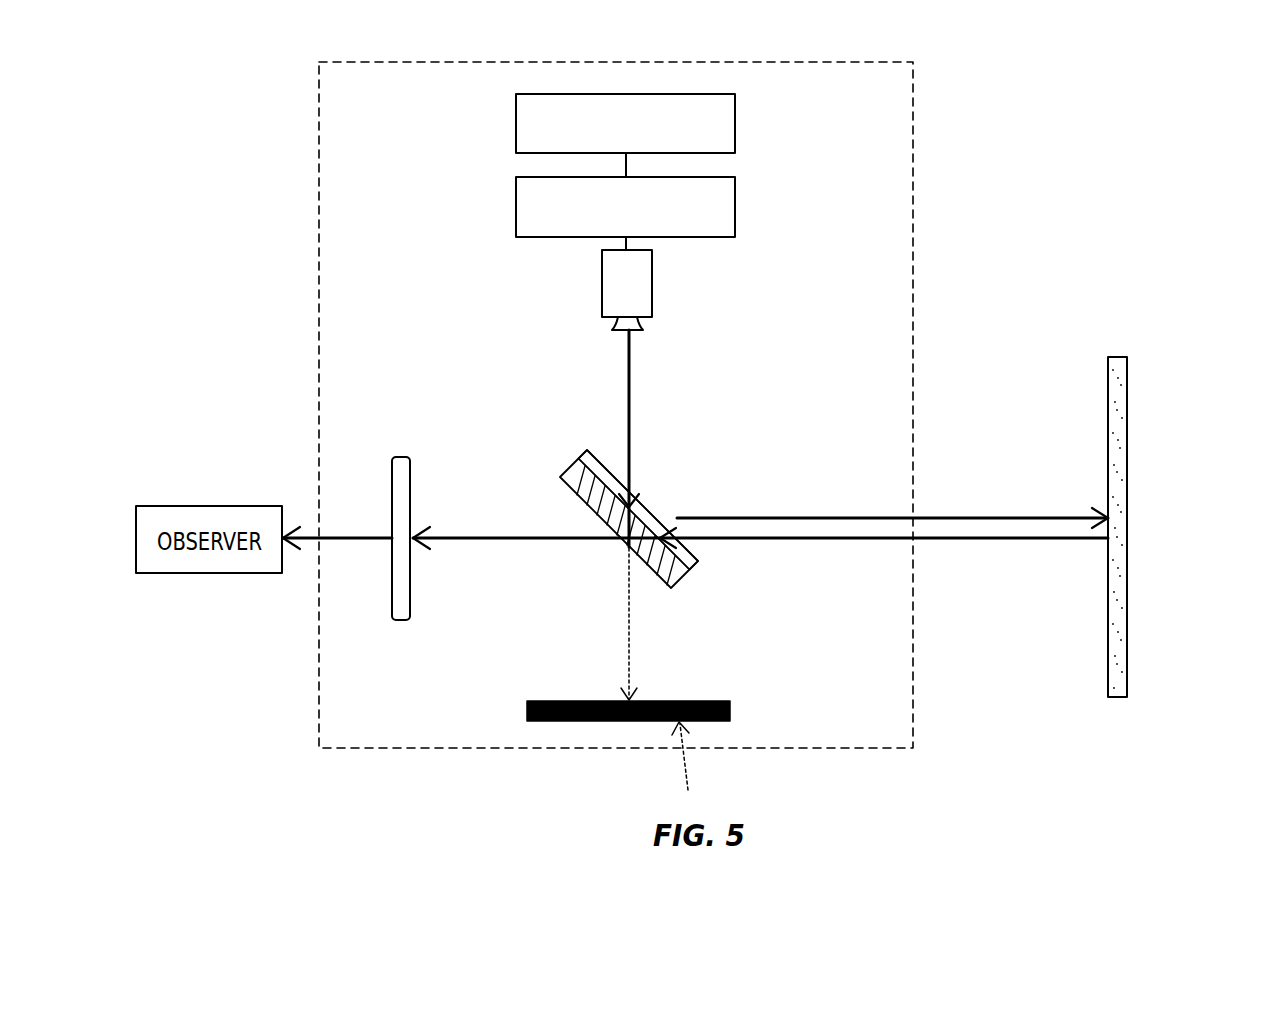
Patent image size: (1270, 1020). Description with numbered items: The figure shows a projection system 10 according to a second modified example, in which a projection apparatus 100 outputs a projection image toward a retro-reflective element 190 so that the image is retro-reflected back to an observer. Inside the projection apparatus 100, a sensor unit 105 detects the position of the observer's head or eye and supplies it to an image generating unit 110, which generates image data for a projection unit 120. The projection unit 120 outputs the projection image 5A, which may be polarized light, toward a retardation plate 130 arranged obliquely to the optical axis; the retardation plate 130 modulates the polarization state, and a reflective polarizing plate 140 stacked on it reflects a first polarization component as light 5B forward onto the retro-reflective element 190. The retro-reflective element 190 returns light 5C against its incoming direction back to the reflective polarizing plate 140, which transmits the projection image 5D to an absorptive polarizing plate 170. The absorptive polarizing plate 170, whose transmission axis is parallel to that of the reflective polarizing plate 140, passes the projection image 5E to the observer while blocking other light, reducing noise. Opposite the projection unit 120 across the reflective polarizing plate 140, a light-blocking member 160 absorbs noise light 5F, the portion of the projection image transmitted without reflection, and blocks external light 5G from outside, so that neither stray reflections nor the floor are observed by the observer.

The projection system 10 is at (668, 809).
The projection apparatus 100 is at (616, 405).
The sensor unit 105 is at (735, 133).
The image generating unit 110 is at (735, 212).
The projection unit 120 is at (652, 282).
The retardation plate 130 is at (700, 563).
The reflective polarizing plate 140 is at (560, 476).
The light-blocking member 160 is at (568, 700).
The absorptive polarizing plate 170 is at (400, 457).
The retro-reflective element 190 is at (1120, 388).
The projection image 5A is at (631, 392).
The projection image reflected toward retro-reflective element 5B is at (780, 517).
The retro-reflected projection image 5C is at (858, 540).
The projection image transmitted to absorptive polarizing plate 5D is at (493, 541).
The projection image toward observer 5E is at (360, 535).
The noise light 5F is at (627, 621).
The external light 5G is at (693, 777).